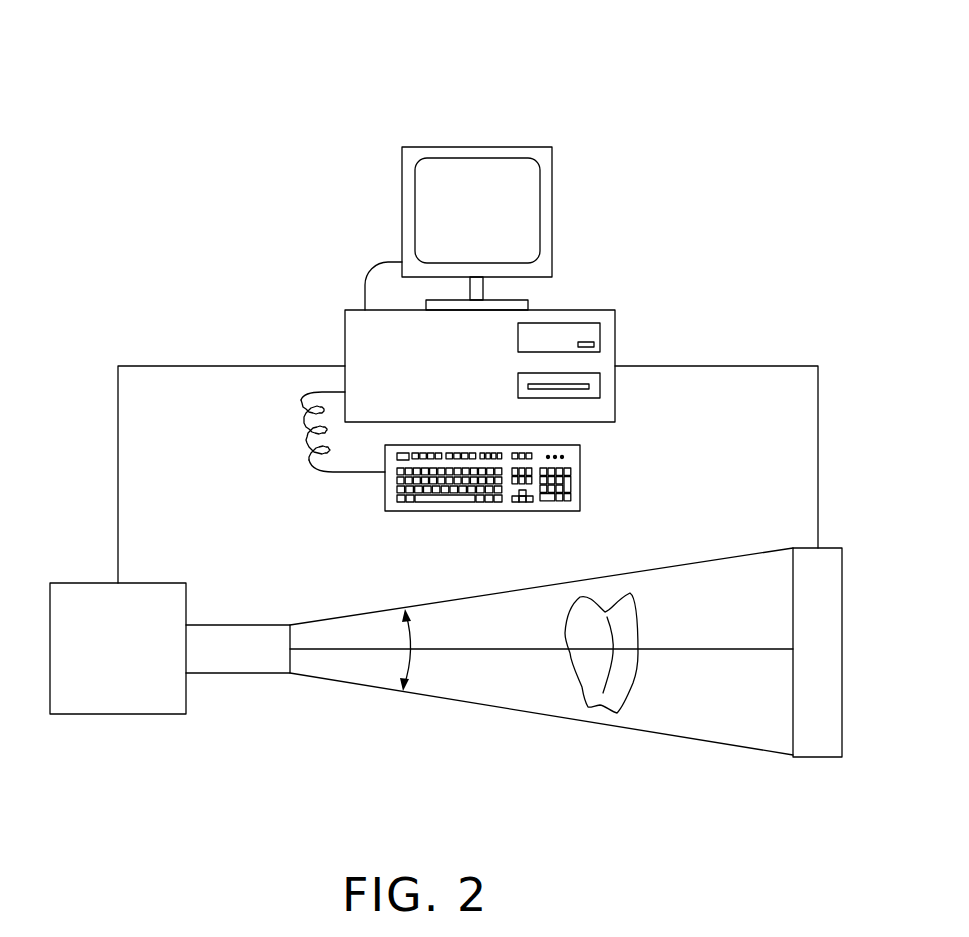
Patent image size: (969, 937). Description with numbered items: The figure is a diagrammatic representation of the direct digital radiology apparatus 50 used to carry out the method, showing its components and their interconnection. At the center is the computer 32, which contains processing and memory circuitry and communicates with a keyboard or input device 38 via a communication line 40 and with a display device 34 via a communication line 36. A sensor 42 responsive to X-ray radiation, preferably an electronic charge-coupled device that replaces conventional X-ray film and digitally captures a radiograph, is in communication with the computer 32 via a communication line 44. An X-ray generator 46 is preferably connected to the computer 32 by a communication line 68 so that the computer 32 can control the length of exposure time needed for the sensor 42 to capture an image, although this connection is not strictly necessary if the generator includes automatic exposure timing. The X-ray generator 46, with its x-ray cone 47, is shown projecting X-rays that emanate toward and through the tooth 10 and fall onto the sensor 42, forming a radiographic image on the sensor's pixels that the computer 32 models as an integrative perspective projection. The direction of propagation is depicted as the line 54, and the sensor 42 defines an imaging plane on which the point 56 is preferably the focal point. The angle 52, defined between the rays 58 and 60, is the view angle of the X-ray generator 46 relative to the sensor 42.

The tooth 10 is at (593, 678).
The computer 32 is at (360, 338).
The display device 34 is at (492, 221).
The communication line 36 is at (367, 270).
The keyboard or input device 38 is at (392, 488).
The communication line 40 is at (305, 393).
The sensor 42 is at (821, 655).
The communication line 44 is at (710, 366).
The X-ray generator 46 is at (150, 690).
The x-ray cone 47 is at (230, 655).
The direct digital radiology apparatus 50 is at (200, 107).
The angle 52 is at (413, 647).
The line 54 is at (538, 652).
The point 56 is at (615, 637).
The ray 58 is at (490, 592).
The ray 60 is at (713, 742).
The communication line 68 is at (118, 452).